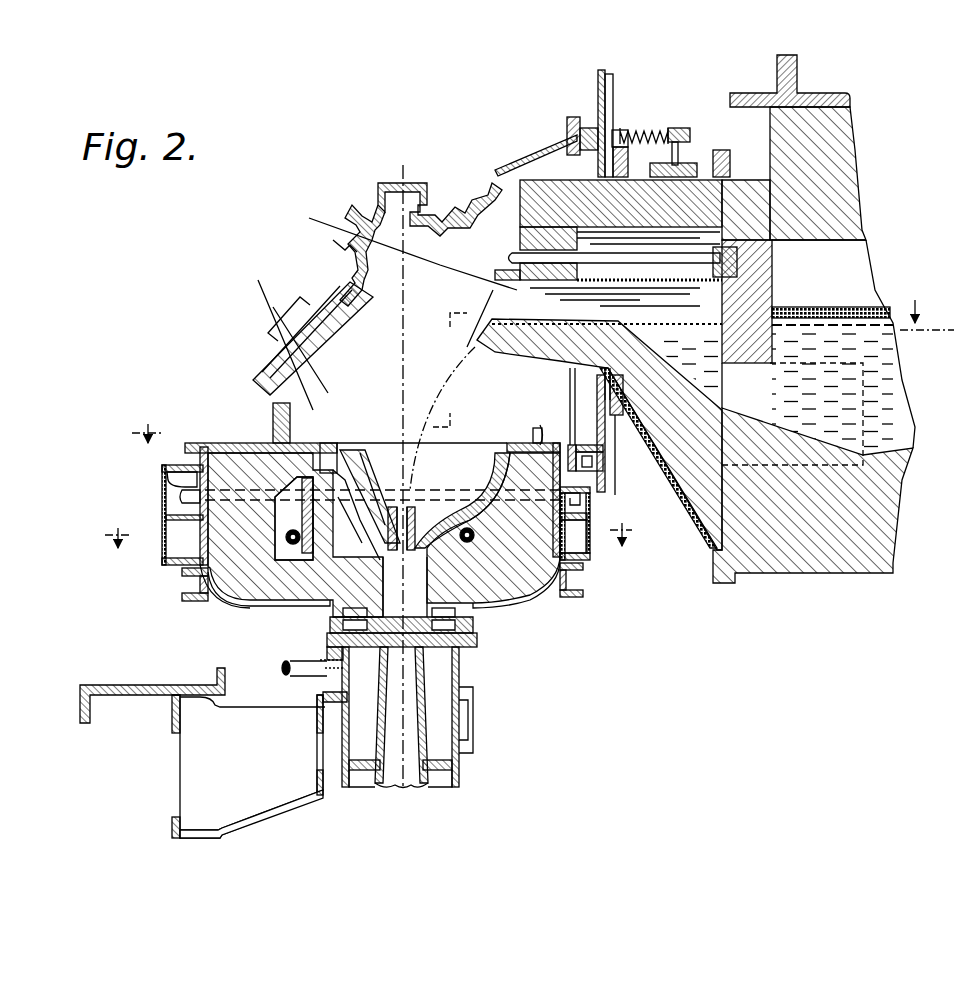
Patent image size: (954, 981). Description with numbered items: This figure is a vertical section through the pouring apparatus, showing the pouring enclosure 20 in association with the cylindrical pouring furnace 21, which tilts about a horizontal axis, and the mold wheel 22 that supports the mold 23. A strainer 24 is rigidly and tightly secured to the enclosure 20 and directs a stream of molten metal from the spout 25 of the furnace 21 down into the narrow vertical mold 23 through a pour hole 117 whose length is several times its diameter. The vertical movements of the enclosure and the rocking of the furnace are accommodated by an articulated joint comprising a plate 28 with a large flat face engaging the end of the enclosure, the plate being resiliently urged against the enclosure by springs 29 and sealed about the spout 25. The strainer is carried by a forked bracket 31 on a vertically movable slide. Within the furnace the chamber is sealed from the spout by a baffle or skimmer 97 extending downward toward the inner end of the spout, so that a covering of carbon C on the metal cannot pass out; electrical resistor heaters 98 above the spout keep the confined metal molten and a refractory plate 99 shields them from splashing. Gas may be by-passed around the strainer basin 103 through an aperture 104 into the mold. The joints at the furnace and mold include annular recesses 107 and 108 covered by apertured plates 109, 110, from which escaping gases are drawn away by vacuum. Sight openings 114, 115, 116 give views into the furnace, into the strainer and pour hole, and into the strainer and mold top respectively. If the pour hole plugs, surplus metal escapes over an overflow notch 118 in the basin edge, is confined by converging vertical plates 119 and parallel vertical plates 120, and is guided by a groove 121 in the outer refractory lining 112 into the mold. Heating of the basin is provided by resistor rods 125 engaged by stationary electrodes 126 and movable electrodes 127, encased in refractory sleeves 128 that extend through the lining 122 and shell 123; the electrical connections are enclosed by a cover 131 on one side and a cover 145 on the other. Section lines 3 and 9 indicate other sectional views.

The pouring furnace 21 is at (840, 92).
The mold wheel 22 is at (200, 685).
The mold 23 is at (425, 672).
The strainer 24 is at (243, 446).
The spout 25 is at (512, 347).
The plate 28 is at (609, 103).
The springs 29 is at (645, 130).
The pouring enclosure 20 is at (494, 162).
The forked bracket 31 is at (583, 594).
The baffle or skimmer 97 is at (768, 292).
The electrical resistor heaters 98 is at (630, 258).
The refractory plate 99 is at (625, 284).
The strainer basin 103 is at (378, 450).
The aperture 104 is at (336, 465).
The annular recess 107 is at (592, 462).
The annular recess 108 is at (325, 645).
The apertured plate 109 is at (590, 495).
The apertured plate 110 is at (470, 640).
The outer refractory lining 112 is at (250, 598).
The sight opening 114 is at (350, 240).
The sight opening 115 is at (403, 190).
The sight opening 116 is at (280, 342).
The pour hole 117 is at (400, 505).
The overflow notch 118 is at (355, 448).
The converging vertical plates 119 is at (294, 518).
The parallel vertical plates 120 is at (330, 600).
The groove 121 is at (343, 545).
The lining 122 is at (540, 590).
The shell 123 is at (183, 560).
The resistor rods 125 is at (275, 612).
The stationary electrodes 126 is at (545, 440).
The movable electrodes 127 is at (168, 480).
The refractory sleeves 128 is at (288, 537).
The cover 131 is at (590, 545).
The cover 145 is at (182, 498).
The section line 3 is at (543, 383).
The section line 9 is at (368, 547).
The carbon covering C is at (850, 313).